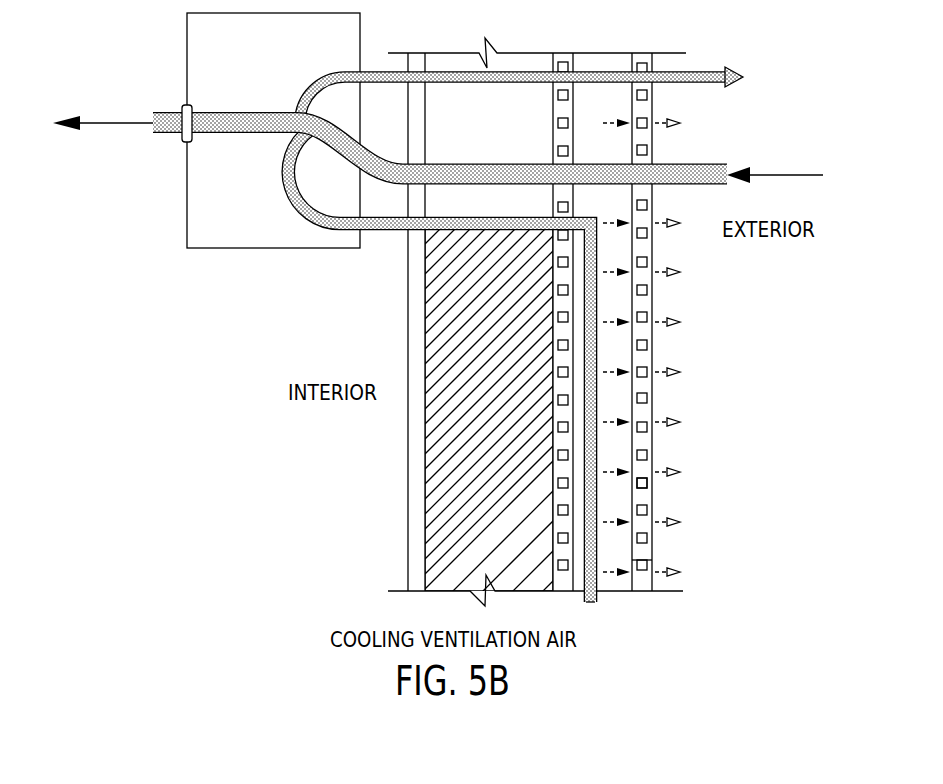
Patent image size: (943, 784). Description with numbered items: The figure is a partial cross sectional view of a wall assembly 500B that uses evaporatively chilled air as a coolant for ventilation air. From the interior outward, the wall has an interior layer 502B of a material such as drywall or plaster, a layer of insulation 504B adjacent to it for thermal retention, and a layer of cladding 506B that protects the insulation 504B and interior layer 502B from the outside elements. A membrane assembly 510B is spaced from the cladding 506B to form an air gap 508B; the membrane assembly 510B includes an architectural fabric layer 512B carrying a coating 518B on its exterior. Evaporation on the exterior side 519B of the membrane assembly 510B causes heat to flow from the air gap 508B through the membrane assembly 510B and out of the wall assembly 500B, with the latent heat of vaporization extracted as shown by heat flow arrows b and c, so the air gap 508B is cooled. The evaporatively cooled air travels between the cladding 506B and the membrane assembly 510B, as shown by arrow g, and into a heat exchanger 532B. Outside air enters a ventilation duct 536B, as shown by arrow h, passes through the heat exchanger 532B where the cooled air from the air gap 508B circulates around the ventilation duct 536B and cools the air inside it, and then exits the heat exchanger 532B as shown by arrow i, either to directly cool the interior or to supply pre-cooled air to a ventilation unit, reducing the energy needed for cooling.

The wall assembly 500B is at (196, 426).
The interior layer 502B is at (408, 482).
The insulation 504B is at (450, 535).
The cladding 506B is at (560, 60).
The air gap 508B is at (615, 447).
The membrane assembly 510B is at (643, 358).
The architectural fabric layer 512B is at (640, 502).
The coating 518B is at (652, 292).
The exterior side 519B is at (652, 582).
The heat exchanger 532B is at (220, 210).
The ventilation duct 536B is at (378, 184).
The arrow i is at (108, 118).
The arrow h is at (790, 175).
The arrow g is at (597, 605).
The heat flow arrow b is at (612, 425).
The heat flow arrow c is at (657, 372).